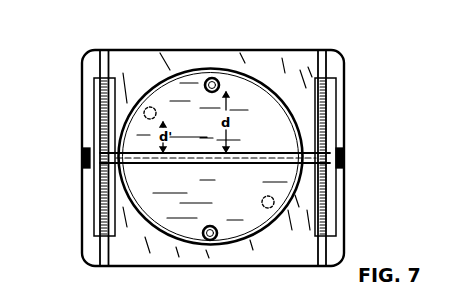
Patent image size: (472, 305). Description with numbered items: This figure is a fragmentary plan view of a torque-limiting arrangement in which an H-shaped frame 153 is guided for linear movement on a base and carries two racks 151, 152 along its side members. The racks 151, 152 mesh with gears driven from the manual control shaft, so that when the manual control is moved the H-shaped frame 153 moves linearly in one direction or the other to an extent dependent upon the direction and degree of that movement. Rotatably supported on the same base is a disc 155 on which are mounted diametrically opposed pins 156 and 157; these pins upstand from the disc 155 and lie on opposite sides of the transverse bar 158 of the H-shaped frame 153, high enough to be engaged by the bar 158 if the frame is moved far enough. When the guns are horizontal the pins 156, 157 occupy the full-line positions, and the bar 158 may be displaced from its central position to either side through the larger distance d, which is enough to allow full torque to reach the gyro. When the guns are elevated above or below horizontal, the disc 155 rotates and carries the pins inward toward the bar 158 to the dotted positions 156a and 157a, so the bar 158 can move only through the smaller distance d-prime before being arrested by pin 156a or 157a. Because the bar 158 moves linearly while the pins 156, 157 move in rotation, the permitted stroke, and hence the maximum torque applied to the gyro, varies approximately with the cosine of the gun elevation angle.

The rack 151 is at (339, 111).
The rack 152 is at (97, 117).
The H-shaped frame 153 is at (329, 187).
The disc 155 is at (257, 92).
The pin 156 is at (213, 78).
The pin position 156a is at (156, 108).
The pin 157 is at (217, 236).
The pin position 157a is at (268, 196).
The transverse bar 158 is at (185, 165).